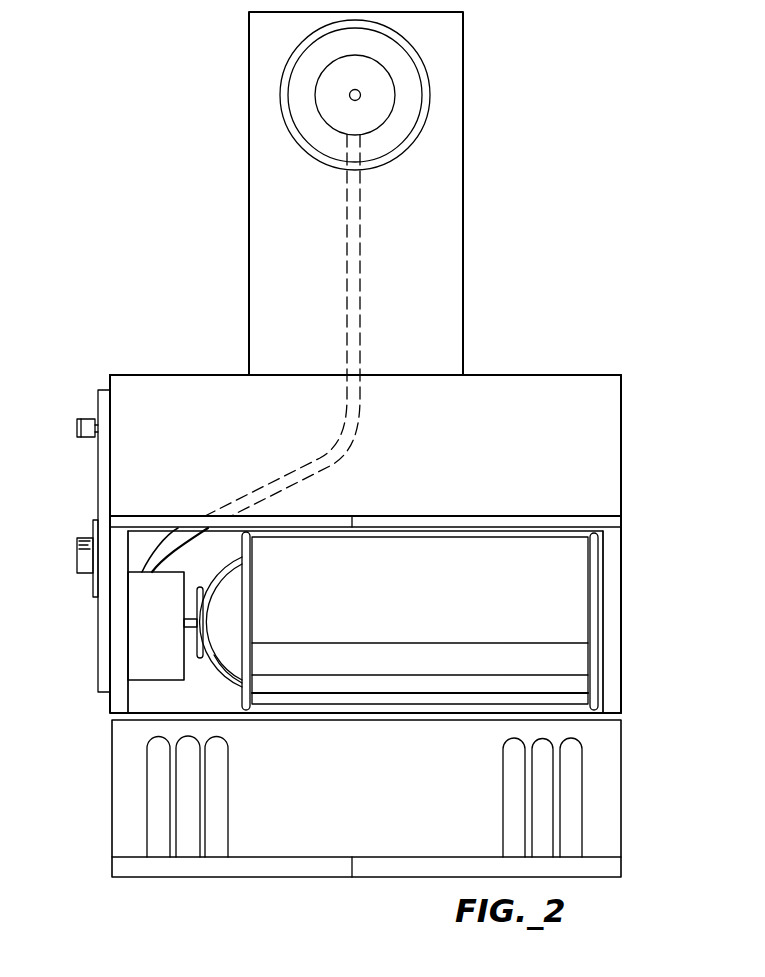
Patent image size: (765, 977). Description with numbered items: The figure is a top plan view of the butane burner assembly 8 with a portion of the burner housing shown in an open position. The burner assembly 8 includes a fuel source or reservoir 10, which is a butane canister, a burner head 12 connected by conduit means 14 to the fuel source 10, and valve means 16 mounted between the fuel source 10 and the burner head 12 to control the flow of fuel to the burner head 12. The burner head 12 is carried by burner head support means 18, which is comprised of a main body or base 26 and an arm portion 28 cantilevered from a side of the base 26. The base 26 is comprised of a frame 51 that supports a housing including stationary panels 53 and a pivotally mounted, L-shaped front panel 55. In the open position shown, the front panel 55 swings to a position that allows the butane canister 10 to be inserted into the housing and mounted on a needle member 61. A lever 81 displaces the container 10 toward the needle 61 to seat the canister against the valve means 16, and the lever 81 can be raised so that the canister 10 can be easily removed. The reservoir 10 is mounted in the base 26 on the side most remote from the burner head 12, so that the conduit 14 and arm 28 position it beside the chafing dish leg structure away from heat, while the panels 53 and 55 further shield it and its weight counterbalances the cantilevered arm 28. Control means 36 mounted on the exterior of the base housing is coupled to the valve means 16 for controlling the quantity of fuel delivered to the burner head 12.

The burner assembly 8 is at (640, 418).
The fuel source or reservoir 10 is at (580, 592).
The burner head 12 is at (395, 93).
The conduit means 14 is at (360, 277).
The valve means 16 is at (138, 657).
The burner head support means 18 is at (583, 332).
The base 26 is at (622, 494).
The arm portion 28 is at (470, 174).
The control means 36 is at (77, 556).
The frame 51 is at (504, 520).
The stationary panels 53 is at (600, 383).
The front panel 55 is at (274, 851).
The needle member 61 is at (197, 660).
The lever 81 is at (77, 425).